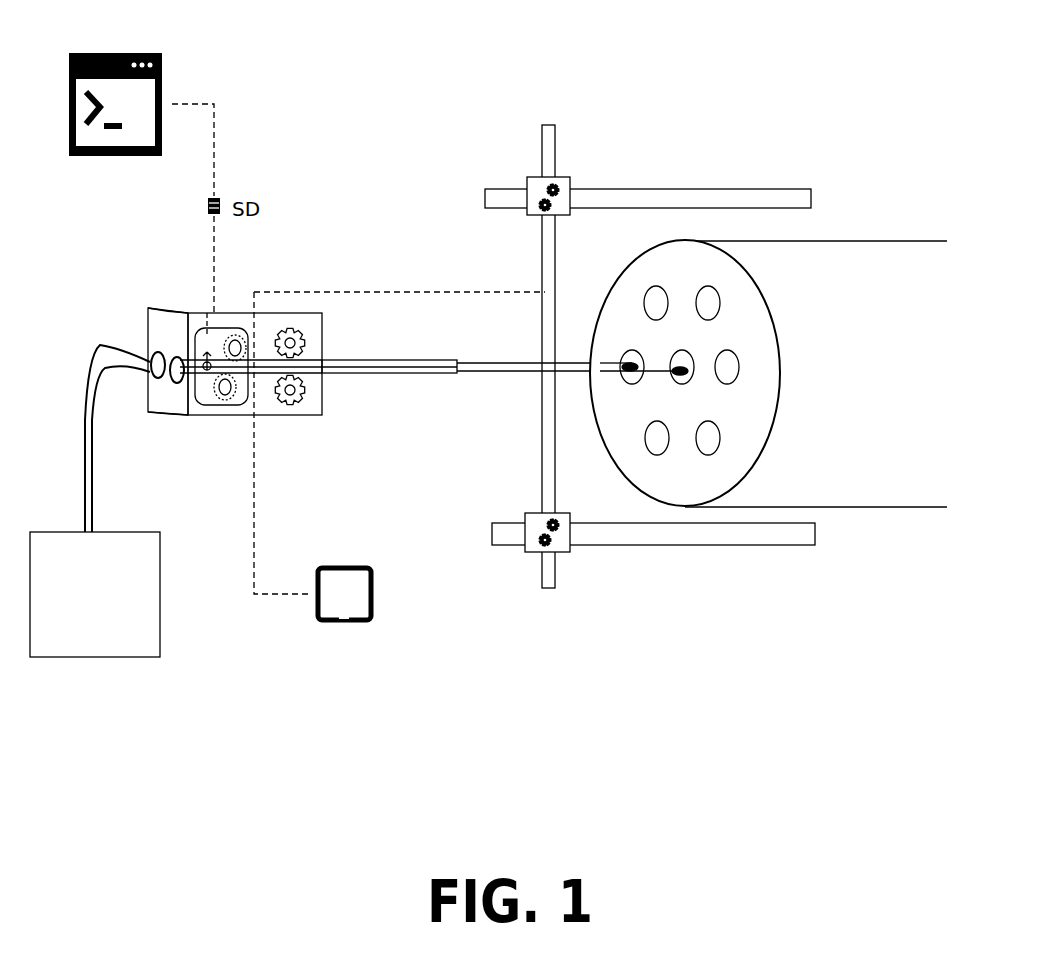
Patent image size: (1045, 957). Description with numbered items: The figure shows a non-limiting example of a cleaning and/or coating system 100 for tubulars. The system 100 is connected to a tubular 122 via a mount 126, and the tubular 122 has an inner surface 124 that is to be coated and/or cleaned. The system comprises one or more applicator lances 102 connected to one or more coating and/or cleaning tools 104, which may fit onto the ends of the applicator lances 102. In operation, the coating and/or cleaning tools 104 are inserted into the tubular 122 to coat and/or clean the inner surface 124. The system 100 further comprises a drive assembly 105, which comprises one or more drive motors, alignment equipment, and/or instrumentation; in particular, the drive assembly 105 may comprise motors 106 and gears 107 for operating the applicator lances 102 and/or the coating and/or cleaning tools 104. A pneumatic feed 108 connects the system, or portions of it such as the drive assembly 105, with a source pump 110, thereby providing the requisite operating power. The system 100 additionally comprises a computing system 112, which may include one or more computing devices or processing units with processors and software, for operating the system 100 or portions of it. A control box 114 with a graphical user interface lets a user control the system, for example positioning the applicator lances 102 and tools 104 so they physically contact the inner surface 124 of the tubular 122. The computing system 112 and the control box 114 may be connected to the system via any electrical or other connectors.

The cleaning and/or coating system 100 is at (230, 322).
The applicator lance 102 is at (388, 376).
The coating and/or cleaning tool 104 is at (680, 369).
The drive assembly 105 is at (203, 407).
The motor 106 is at (235, 360).
The gear 107 is at (302, 337).
The pneumatic feed 108 is at (130, 357).
The source pump 110 is at (95, 594).
The computing system 112 is at (162, 72).
The control box 114 is at (368, 622).
The tubular 122 is at (898, 253).
The inner surface 124 is at (710, 300).
The mount 126 is at (513, 188).